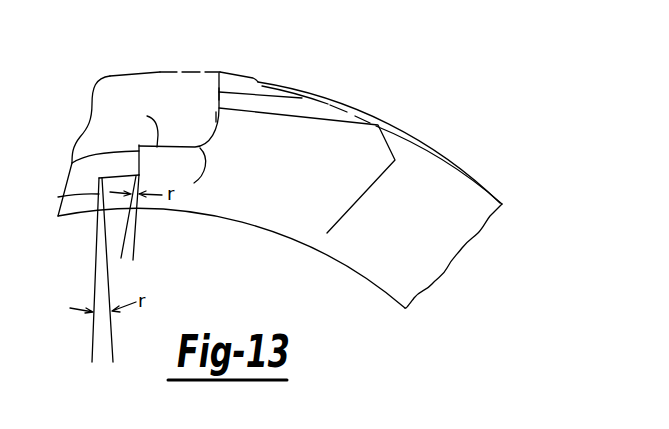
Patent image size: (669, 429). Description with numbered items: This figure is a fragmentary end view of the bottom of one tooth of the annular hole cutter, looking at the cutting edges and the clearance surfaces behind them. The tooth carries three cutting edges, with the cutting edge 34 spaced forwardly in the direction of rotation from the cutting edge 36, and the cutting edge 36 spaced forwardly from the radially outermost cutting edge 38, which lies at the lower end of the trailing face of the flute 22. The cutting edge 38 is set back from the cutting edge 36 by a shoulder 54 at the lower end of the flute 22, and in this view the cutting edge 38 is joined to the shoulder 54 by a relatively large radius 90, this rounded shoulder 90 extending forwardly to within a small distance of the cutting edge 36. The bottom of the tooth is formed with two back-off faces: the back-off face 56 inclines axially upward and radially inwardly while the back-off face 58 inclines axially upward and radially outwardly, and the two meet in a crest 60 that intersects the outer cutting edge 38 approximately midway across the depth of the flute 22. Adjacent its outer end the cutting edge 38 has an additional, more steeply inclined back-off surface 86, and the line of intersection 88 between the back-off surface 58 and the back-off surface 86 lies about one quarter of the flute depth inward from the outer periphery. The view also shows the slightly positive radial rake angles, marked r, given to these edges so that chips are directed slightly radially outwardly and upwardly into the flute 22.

The flute 22 is at (154, 103).
The shoulder 54 is at (147, 116).
The cutting edge 38 is at (218, 95).
The cutting edge 36 is at (72, 163).
The cutting edge 34 is at (58, 197).
The line of intersection 88 is at (232, 92).
The additional back-off surface 86 is at (258, 82).
The back-off face 58 is at (270, 108).
The back-off face 56 is at (272, 217).
The crest 60 is at (216, 122).
The rounded shoulder 90 is at (194, 183).